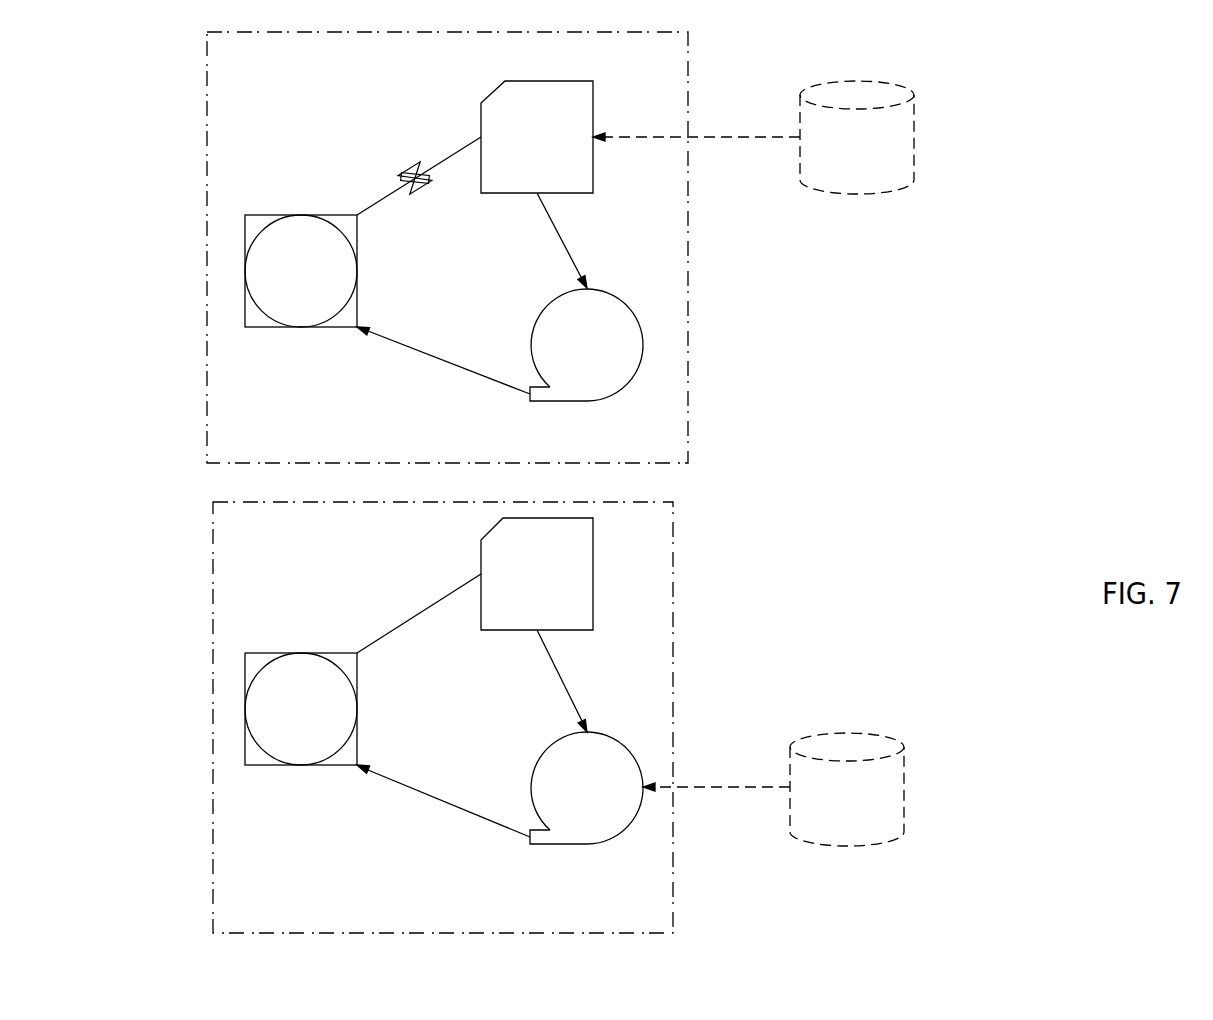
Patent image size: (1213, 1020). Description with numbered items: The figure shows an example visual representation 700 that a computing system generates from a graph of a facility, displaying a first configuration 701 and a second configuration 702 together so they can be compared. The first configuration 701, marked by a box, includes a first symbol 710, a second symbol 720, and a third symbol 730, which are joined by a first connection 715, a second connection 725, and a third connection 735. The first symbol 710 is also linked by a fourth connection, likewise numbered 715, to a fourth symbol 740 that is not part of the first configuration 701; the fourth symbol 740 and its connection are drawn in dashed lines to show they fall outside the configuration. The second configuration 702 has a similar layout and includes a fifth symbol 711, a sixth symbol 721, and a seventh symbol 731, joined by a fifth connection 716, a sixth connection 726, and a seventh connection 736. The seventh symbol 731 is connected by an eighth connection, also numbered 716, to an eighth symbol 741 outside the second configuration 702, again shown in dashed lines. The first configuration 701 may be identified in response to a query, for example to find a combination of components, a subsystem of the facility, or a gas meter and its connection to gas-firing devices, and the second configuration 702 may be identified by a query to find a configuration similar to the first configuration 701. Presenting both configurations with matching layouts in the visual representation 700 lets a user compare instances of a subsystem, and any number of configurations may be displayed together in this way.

The visual representation 700 is at (1050, 34).
The first configuration 701 is at (205, 166).
The second configuration 702 is at (210, 600).
The first symbol 710 is at (518, 161).
The fifth symbol 711 is at (518, 598).
The first connection 715 is at (405, 172).
The fifth connection 716 is at (408, 616).
The second symbol 720 is at (282, 283).
The sixth symbol 721 is at (282, 720).
The second connection 725 is at (425, 350).
The sixth connection 726 is at (425, 787).
The third symbol 730 is at (568, 362).
The seventh symbol 731 is at (568, 804).
The third connection 735 is at (567, 245).
The seventh connection 736 is at (567, 683).
The fourth symbol 740 is at (838, 156).
The eighth symbol 741 is at (828, 809).